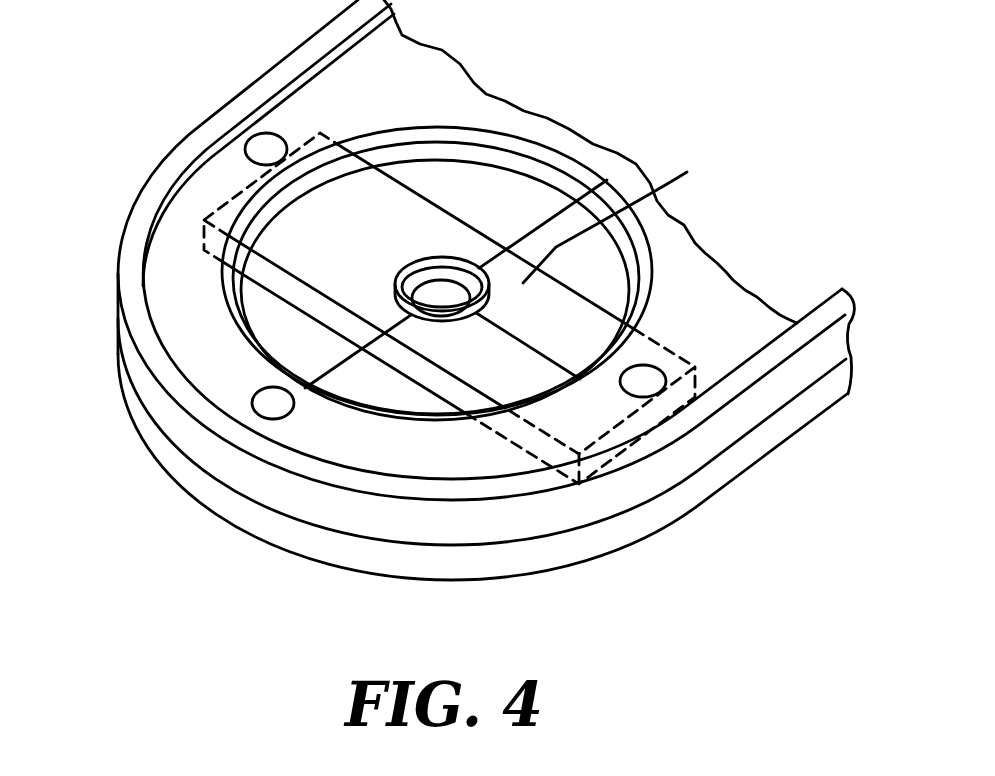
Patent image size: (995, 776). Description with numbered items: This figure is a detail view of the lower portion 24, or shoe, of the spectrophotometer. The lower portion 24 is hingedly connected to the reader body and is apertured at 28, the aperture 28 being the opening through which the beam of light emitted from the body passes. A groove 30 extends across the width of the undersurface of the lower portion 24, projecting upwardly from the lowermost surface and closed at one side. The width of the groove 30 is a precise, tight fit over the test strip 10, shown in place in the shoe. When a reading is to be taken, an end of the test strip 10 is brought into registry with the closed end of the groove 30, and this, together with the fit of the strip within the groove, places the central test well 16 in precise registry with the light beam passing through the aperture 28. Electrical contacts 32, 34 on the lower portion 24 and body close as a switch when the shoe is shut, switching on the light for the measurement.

The test strip 10 is at (619, 209).
The first central well 16 is at (435, 297).
The lower portion 24 is at (177, 228).
The aperture 28 is at (287, 325).
The groove 30 is at (530, 338).
The electrical contact 32 is at (347, 360).
The electrical contact 34 is at (535, 255).